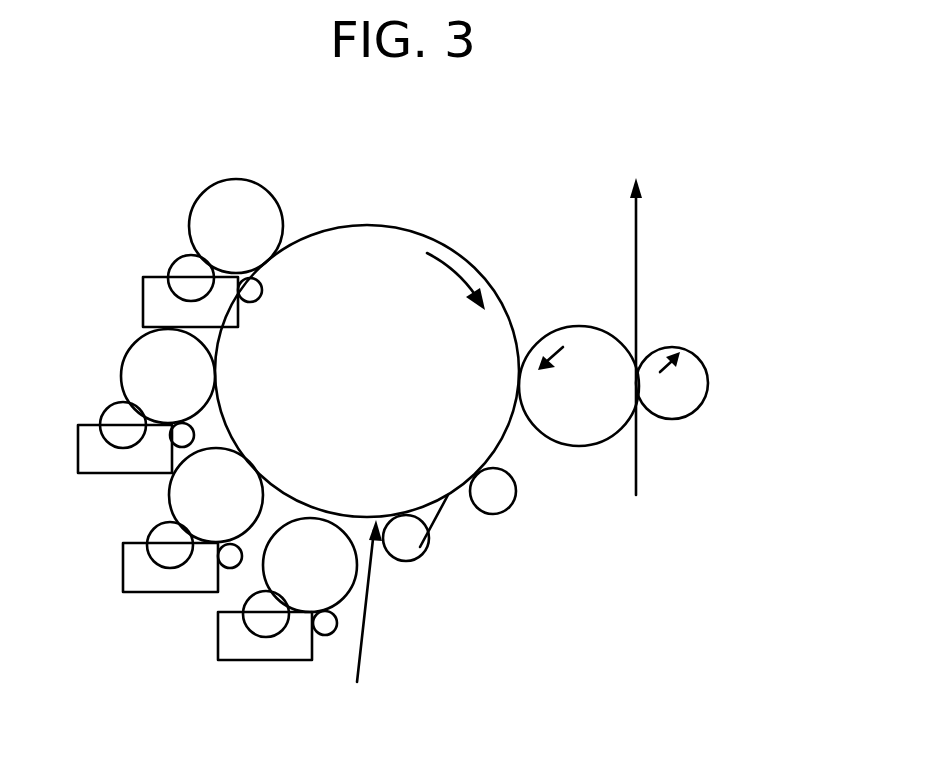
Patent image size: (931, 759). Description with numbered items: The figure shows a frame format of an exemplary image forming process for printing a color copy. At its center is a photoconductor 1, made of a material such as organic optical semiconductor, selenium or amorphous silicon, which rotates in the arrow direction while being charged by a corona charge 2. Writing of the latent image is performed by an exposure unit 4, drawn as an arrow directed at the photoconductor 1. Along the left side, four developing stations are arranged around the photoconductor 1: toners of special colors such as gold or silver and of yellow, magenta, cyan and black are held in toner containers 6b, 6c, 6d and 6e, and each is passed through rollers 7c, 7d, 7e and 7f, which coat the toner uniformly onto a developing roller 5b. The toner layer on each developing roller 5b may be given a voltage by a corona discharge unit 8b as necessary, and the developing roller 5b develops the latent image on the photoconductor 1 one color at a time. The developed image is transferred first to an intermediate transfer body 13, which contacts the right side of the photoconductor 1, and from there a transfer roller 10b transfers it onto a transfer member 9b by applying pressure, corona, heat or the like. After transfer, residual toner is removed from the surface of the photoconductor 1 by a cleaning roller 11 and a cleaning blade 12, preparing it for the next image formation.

The photoconductor 1 is at (395, 226).
The corona charge 2 is at (406, 562).
The exposure unit 4 is at (363, 645).
The developing roller 5b is at (268, 193).
The toner container 6b is at (255, 660).
The toner container 6c is at (123, 587).
The toner container 6d is at (78, 458).
The toner container 6e is at (143, 288).
The roller 7c is at (218, 605).
The roller 7d is at (150, 533).
The roller 7e is at (103, 413).
The roller 7f is at (176, 260).
The corona discharge unit 8b is at (263, 290).
The transfer member 9b is at (636, 232).
The transfer roller 10b is at (708, 380).
The cleaning roller 11 is at (510, 510).
The cleaning blade 12 is at (430, 530).
The intermediate transfer body 13 is at (582, 447).